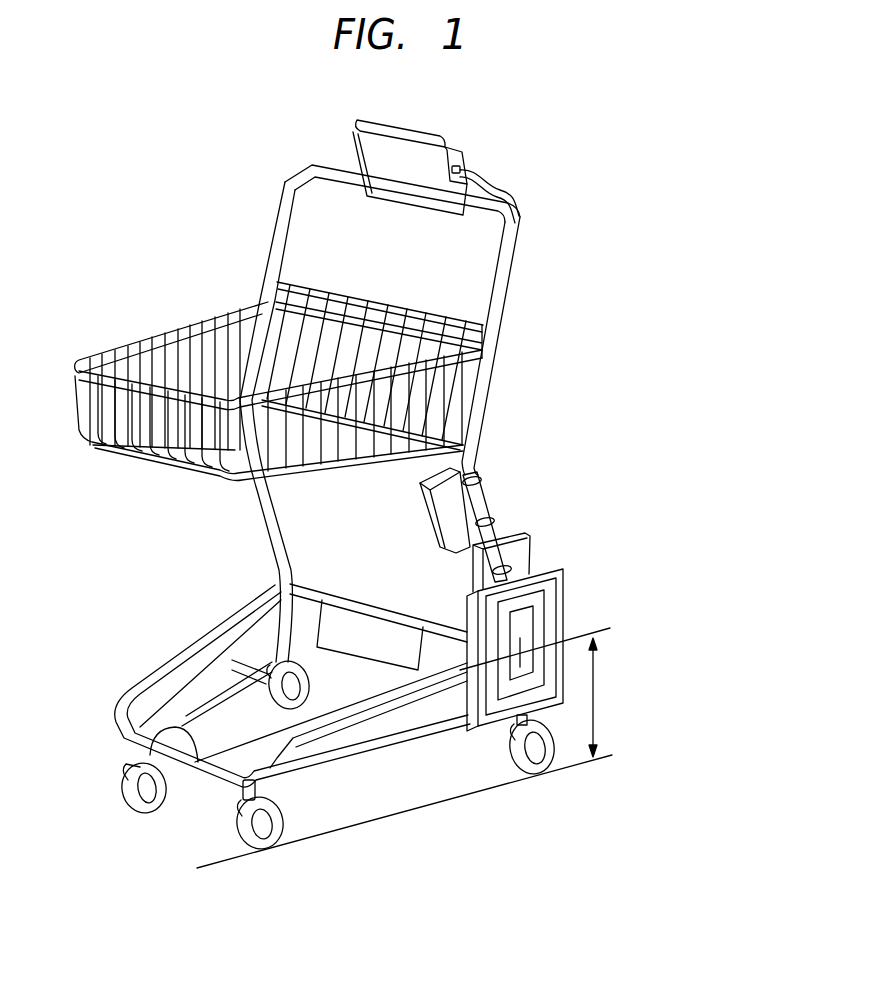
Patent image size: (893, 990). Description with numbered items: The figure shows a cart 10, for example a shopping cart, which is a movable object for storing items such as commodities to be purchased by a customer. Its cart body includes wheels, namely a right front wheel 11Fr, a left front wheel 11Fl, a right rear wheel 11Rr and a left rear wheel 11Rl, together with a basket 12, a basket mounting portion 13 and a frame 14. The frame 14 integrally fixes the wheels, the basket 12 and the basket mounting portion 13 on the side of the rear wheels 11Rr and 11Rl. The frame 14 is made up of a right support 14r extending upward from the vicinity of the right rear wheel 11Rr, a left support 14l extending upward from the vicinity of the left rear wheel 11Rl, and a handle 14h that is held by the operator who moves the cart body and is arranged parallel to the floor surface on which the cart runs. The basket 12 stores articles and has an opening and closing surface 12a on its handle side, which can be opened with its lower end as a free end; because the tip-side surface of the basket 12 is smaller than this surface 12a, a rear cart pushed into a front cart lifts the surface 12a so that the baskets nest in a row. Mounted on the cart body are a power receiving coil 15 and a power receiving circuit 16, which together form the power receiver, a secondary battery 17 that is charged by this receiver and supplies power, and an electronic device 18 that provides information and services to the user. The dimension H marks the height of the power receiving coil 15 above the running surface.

The cart 10 is at (670, 614).
The right front wheel 11Fr is at (122, 792).
The left front wheel 11Fl is at (263, 847).
The right rear wheel 11Rr is at (307, 680).
The left rear wheel 11Rl is at (537, 773).
The basket 12 is at (170, 348).
The opening and closing surface 12a is at (405, 303).
The basket mounting portion 13 is at (180, 674).
The frame 14 is at (528, 230).
The handle 14h is at (337, 173).
The right support 14r is at (280, 211).
The left support 14l is at (502, 279).
The power receiving coil 15 is at (550, 612).
The power receiving circuit 16 is at (515, 549).
The secondary battery 17 is at (465, 508).
The electronic device 18 is at (357, 136).
The height of antenna unit H is at (405, 748).